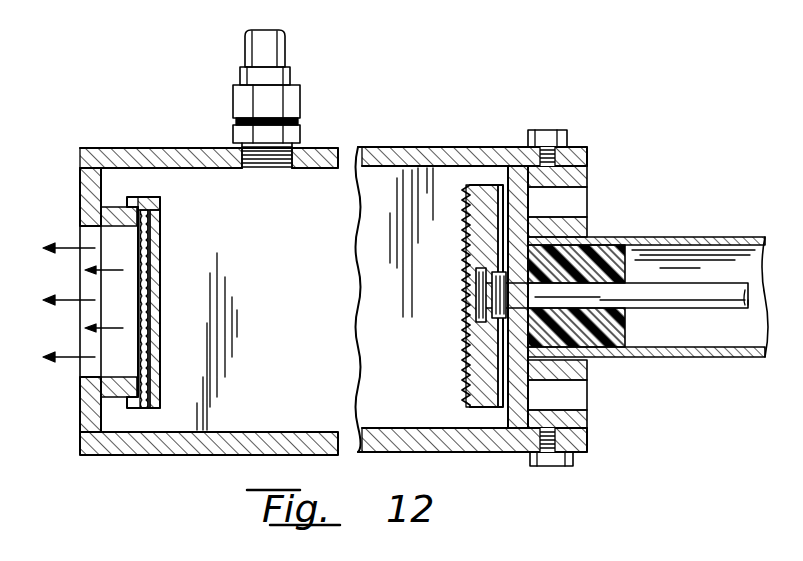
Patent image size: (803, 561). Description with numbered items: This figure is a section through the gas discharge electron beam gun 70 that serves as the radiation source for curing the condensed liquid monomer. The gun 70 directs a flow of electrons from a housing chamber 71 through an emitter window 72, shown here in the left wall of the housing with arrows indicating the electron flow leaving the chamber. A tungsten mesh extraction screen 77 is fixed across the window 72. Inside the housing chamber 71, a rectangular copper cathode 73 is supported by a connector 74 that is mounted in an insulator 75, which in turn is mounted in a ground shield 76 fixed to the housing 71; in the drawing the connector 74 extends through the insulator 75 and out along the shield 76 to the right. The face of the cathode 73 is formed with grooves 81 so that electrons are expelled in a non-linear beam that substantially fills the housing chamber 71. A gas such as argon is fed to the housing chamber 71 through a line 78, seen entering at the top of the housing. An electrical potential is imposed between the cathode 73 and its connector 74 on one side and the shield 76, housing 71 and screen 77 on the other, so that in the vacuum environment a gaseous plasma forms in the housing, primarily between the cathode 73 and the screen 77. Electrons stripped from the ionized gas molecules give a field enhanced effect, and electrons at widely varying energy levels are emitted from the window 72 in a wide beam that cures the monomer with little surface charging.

The gas discharge electron beam gun 70 is at (150, 116).
The housing chamber 71 is at (437, 147).
The emitter window 72 is at (85, 238).
The rectangular copper cathode 73 is at (480, 382).
The connector 74 is at (660, 310).
The insulator 75 is at (600, 250).
The ground shield 76 is at (700, 240).
The tungsten mesh extraction screen 77 is at (148, 258).
The line 78 is at (287, 45).
The grooves 81 is at (462, 362).